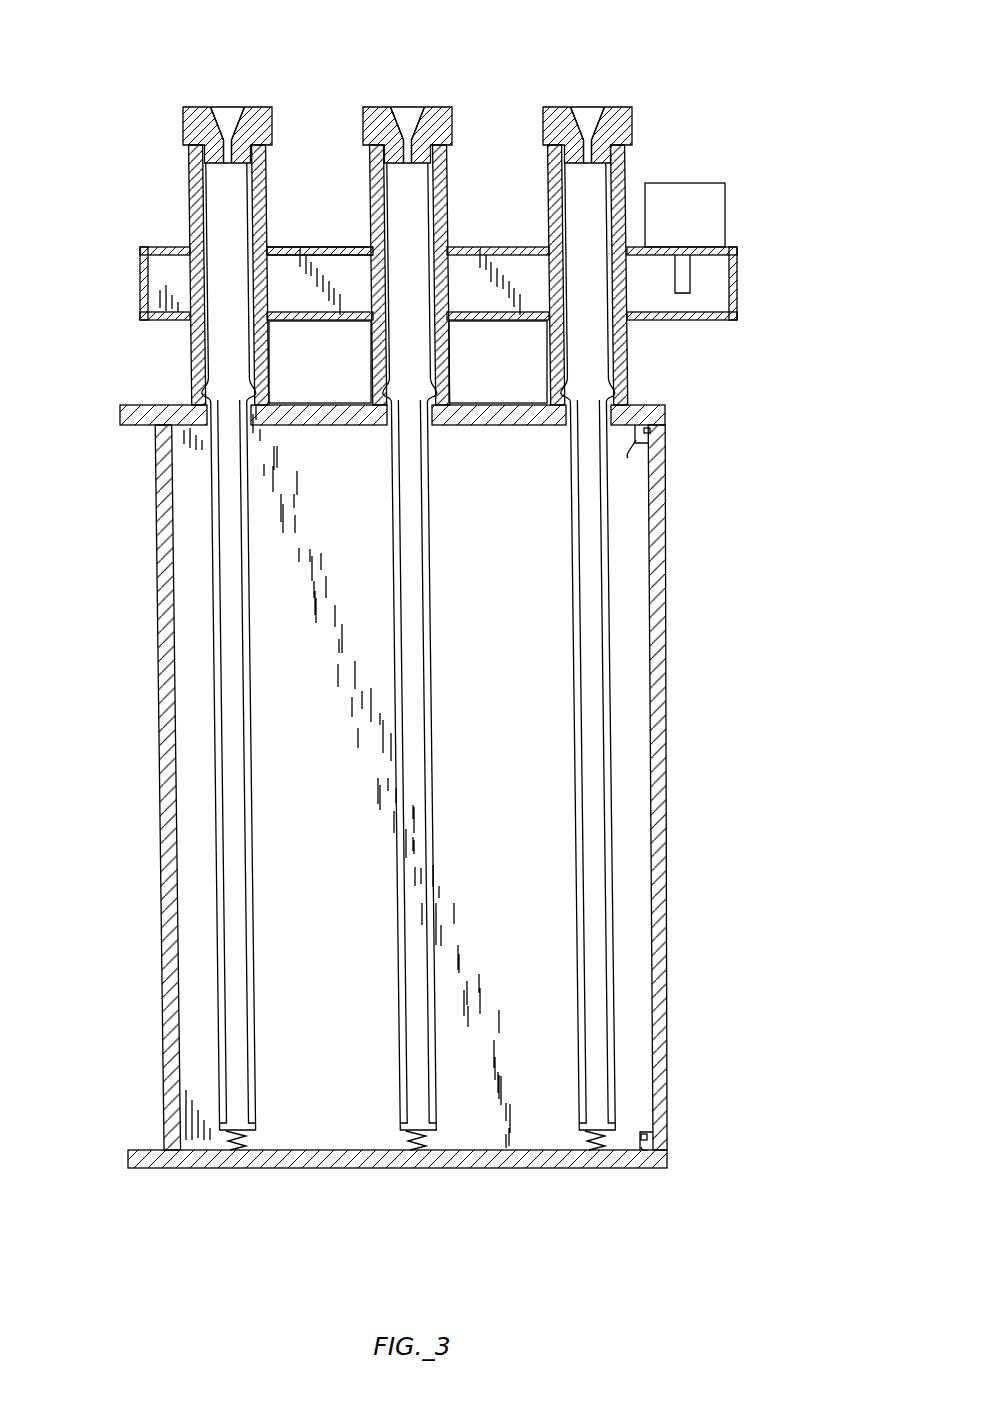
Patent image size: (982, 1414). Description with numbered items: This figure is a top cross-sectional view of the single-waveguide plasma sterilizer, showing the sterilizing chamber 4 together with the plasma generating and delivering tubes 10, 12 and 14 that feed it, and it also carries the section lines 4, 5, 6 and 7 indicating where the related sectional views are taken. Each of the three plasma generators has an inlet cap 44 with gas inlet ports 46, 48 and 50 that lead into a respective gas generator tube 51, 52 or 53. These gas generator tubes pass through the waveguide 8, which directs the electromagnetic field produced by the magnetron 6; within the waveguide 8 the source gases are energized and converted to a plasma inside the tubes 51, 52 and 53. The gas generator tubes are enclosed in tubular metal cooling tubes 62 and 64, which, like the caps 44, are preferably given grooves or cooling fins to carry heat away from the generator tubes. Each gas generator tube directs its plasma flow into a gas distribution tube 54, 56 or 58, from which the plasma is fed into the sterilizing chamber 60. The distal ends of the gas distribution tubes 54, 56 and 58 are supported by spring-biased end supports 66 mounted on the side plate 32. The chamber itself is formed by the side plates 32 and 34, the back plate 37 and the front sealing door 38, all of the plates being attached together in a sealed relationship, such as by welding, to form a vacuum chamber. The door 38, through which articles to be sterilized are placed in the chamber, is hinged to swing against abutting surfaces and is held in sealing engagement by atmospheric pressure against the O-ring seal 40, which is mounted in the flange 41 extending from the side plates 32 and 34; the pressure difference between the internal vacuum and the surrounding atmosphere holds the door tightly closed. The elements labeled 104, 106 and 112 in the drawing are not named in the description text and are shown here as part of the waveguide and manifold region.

The sterilizing chamber 4 is at (408, 48).
The section line 5- 5 is at (210, 672).
The magnetron 6 is at (680, 183).
The section line 7- 7 is at (390, 672).
The waveguide 8 is at (718, 318).
The plasma generating and delivering tube 10 is at (128, 285).
The plasma generating and delivering tube 12 is at (345, 180).
The plasma generating and delivering tube 14 is at (528, 162).
The side plate 32 is at (608, 1170).
The side plate 34 is at (665, 407).
The back plate 37 is at (160, 709).
The front sealing door 38 is at (667, 768).
The O-ring seal 40 is at (652, 433).
The flange 41 is at (642, 445).
The inlet cap 44 is at (183, 130).
The gas inlet port 46 is at (214, 110).
The gas inlet port 48 is at (228, 107).
The gas inlet port 50 is at (246, 107).
The gas generator tube 51 is at (220, 345).
The gas generator tube 52 is at (415, 340).
The gas generator tube 53 is at (590, 340).
The gas distribution tube 54 is at (248, 748).
The gas distribution tube 56 is at (430, 748).
The gas distribution tube 58 is at (577, 778).
The sterilizing chamber 60 is at (550, 862).
The cooling tube 62 is at (190, 183).
The cooling tube 64 is at (268, 378).
The spring-biased end support 66 is at (258, 1142).
The manifold plate 104 is at (346, 250).
The spacer block 106 is at (343, 320).
The pin 112 is at (673, 275).